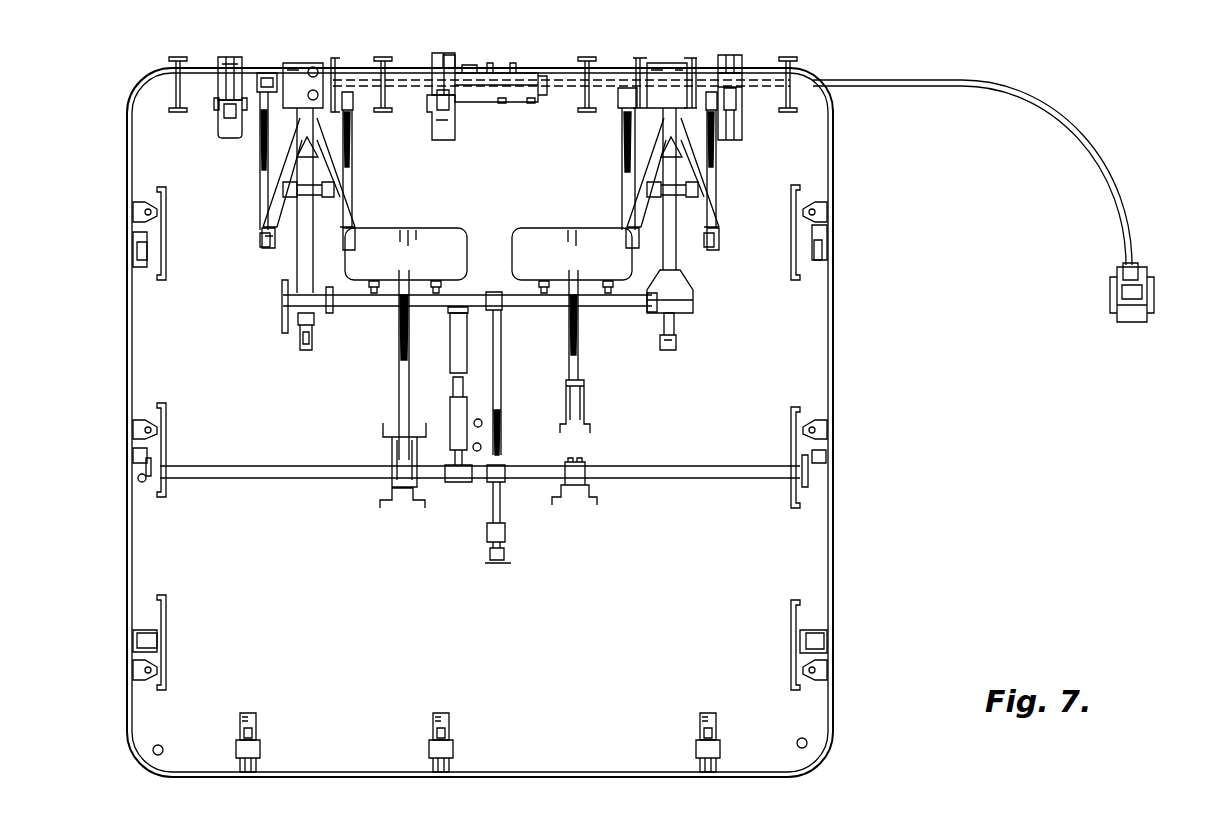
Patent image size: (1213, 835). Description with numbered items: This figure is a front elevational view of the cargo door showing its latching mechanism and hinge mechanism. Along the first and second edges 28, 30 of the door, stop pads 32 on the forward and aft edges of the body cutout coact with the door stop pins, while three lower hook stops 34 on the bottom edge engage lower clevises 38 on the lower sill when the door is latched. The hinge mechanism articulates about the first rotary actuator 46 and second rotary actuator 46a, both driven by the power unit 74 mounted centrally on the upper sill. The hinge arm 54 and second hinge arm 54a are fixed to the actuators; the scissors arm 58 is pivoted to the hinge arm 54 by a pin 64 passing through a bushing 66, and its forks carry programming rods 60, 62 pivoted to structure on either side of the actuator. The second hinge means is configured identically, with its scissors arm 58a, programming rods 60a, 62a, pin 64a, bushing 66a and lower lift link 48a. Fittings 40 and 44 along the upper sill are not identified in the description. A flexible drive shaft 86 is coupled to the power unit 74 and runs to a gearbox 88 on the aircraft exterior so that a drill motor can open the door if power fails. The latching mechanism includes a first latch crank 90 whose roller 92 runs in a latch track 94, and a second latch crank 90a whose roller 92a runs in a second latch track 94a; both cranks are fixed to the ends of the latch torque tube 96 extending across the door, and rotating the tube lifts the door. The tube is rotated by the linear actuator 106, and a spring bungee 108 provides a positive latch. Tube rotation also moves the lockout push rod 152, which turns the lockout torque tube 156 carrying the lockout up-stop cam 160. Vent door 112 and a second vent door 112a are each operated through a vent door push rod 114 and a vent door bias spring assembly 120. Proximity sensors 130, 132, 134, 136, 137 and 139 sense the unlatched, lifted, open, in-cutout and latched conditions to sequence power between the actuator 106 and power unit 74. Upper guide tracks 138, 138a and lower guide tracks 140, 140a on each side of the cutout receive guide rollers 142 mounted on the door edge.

The first edge 28 is at (160, 186).
The second edge 30 is at (795, 185).
The stop pads 32 is at (142, 210).
The lower hook stops 34 is at (257, 724).
The lower clevises 38 is at (260, 750).
The clamp 40 is at (228, 105).
The rail bracket 44 is at (232, 57).
The first rotary actuator 46 is at (303, 63).
The second rotary actuator 46a is at (660, 63).
The lower lift link 48a is at (682, 282).
The hinge arm 54 is at (300, 264).
The second hinge arm 54a is at (680, 246).
The scissors arm 58 is at (350, 208).
The A-frame 58a is at (630, 198).
The programming rod 60 is at (262, 155).
The rod 60a is at (624, 152).
The programming rod 62 is at (353, 158).
The rod 62a is at (718, 163).
The pin 64 is at (329, 200).
The cross member 64a is at (628, 212).
The bushing 66 is at (290, 208).
The link 66a is at (711, 210).
The power unit 74 is at (507, 68).
The flexible drive shaft 86 is at (1048, 98).
The gearbox 88 is at (1150, 272).
The first latch crank 90 is at (166, 484).
The second latch crank 90a is at (795, 510).
The roller 92 is at (140, 452).
The roller 92a is at (826, 456).
The latch track 94 is at (148, 466).
The second latch track 94a is at (810, 478).
The latch torque tube 96 is at (660, 474).
The linear actuator 106 is at (453, 340).
The spring bungee 108 is at (506, 532).
The vent door 112 is at (424, 230).
The tank 112a is at (530, 238).
The vent door push rod 114 is at (398, 340).
The vent door bias spring assembly 120 is at (400, 398).
The proximity sensor 130 is at (142, 484).
The proximity sensor 132 is at (482, 447).
The proximity sensors 134 is at (300, 95).
The proximity sensors 136 is at (160, 745).
The proximity sensors 137 is at (482, 420).
The upper guide track 138 is at (136, 236).
The upper guide track 138a is at (830, 247).
The proximity sensor 139 is at (318, 70).
The lower guide track 140 is at (134, 640).
The lower guide track 140a is at (830, 641).
The guide rollers 142 is at (136, 264).
The lockout push rod 152 is at (500, 365).
The lockout torque tube 156 is at (608, 307).
The lockout up-stop cam 160 is at (676, 330).